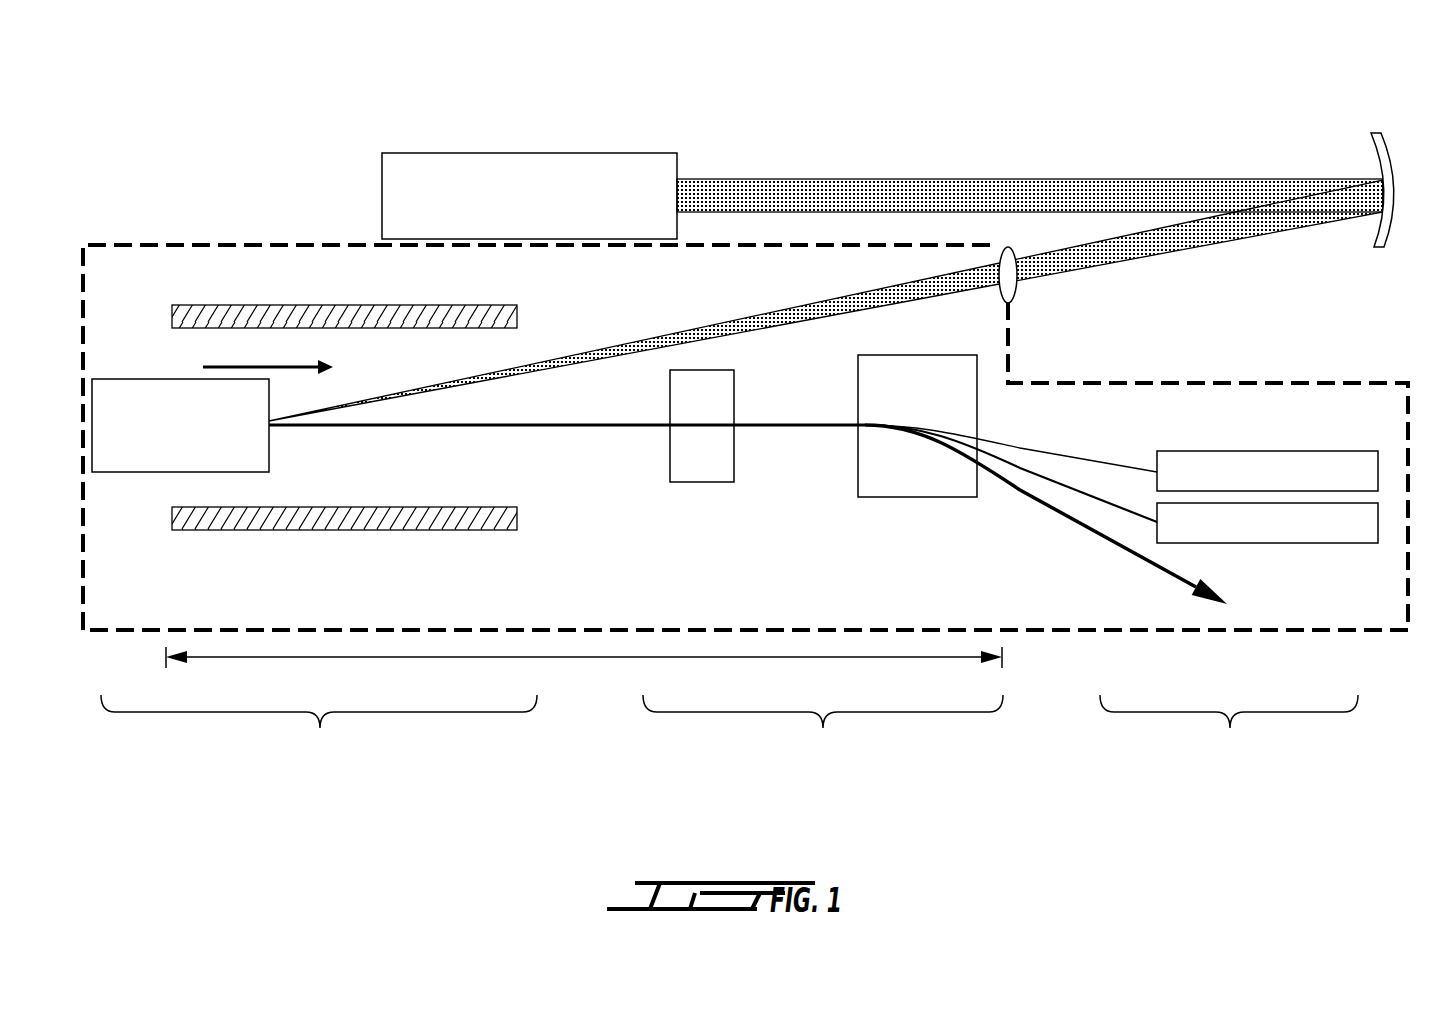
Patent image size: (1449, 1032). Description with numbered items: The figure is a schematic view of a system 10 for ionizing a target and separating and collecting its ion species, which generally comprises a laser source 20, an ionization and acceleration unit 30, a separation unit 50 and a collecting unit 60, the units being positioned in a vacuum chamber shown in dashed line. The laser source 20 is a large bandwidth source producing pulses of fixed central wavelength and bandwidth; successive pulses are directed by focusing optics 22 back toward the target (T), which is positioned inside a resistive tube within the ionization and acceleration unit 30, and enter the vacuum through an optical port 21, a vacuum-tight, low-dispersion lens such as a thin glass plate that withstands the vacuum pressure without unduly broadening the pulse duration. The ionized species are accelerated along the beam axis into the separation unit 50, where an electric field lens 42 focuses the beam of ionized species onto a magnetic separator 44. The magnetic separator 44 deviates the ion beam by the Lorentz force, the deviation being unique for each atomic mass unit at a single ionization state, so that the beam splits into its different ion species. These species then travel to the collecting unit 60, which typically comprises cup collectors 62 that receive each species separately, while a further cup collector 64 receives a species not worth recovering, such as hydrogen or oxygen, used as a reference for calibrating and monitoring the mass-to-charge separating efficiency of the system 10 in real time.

The ion source apparatus 10 is at (186, 136).
The laser source 20 is at (535, 145).
The optical port 21 is at (1018, 292).
The focusing optics 22 is at (1394, 183).
The ionization and acceleration unit 30 is at (315, 794).
The electric field lens 42 is at (670, 452).
The magnetic separator 44 is at (858, 452).
The separation unit 50 is at (819, 794).
The collecting unit 60 is at (1220, 794).
The cup collectors 62 is at (1372, 472).
The cup collector 64 is at (1240, 607).